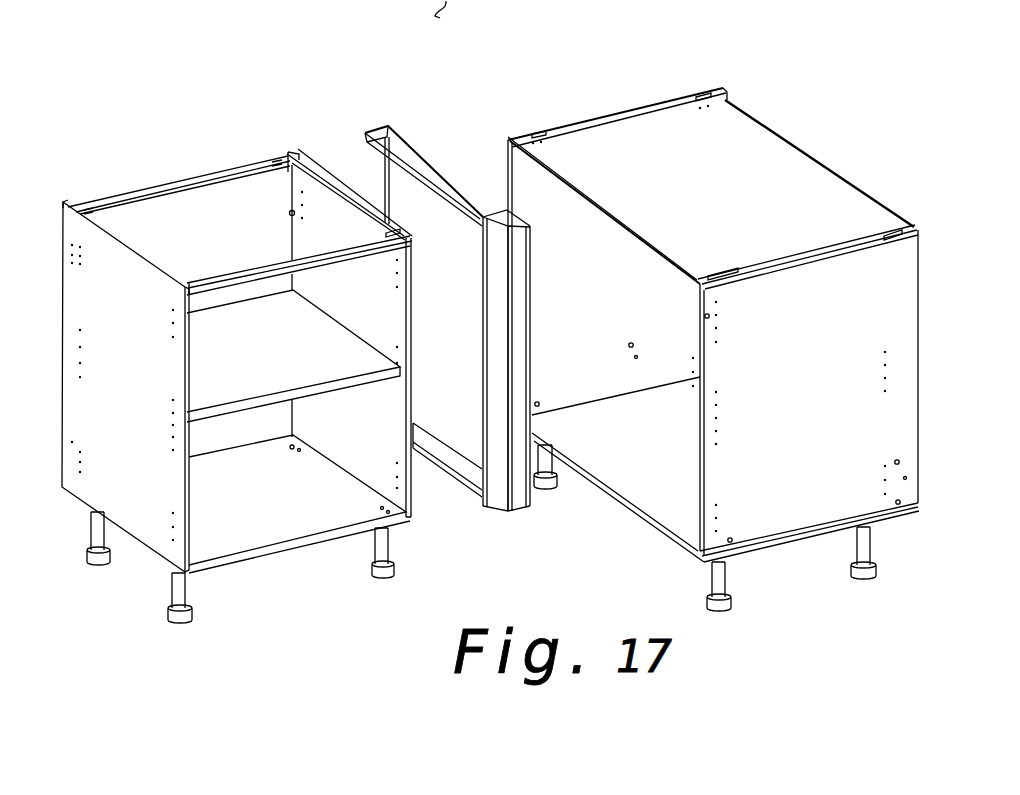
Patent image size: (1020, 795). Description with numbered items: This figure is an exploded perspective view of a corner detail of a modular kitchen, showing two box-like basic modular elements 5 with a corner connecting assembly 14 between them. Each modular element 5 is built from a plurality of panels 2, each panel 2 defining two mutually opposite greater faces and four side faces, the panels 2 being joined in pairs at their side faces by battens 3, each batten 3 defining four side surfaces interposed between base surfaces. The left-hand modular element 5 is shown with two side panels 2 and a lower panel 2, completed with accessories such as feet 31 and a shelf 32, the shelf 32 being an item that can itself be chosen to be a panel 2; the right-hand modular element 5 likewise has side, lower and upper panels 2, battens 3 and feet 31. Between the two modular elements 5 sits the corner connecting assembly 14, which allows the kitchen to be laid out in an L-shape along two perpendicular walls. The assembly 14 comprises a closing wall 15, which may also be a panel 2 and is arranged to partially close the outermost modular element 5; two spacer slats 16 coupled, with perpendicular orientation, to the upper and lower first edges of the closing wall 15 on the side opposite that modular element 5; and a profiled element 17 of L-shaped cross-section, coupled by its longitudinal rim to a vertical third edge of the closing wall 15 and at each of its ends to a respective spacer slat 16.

The panel 2 is at (150, 470).
The batten 3 is at (322, 162).
The modular element 5 is at (170, 168).
The corner connecting assembly 14 is at (445, 158).
The closing wall 15 is at (428, 230).
The spacer slat 16 is at (465, 192).
The profiled element 17 is at (498, 468).
The feet 31 is at (98, 565).
The shelves 32 is at (238, 345).